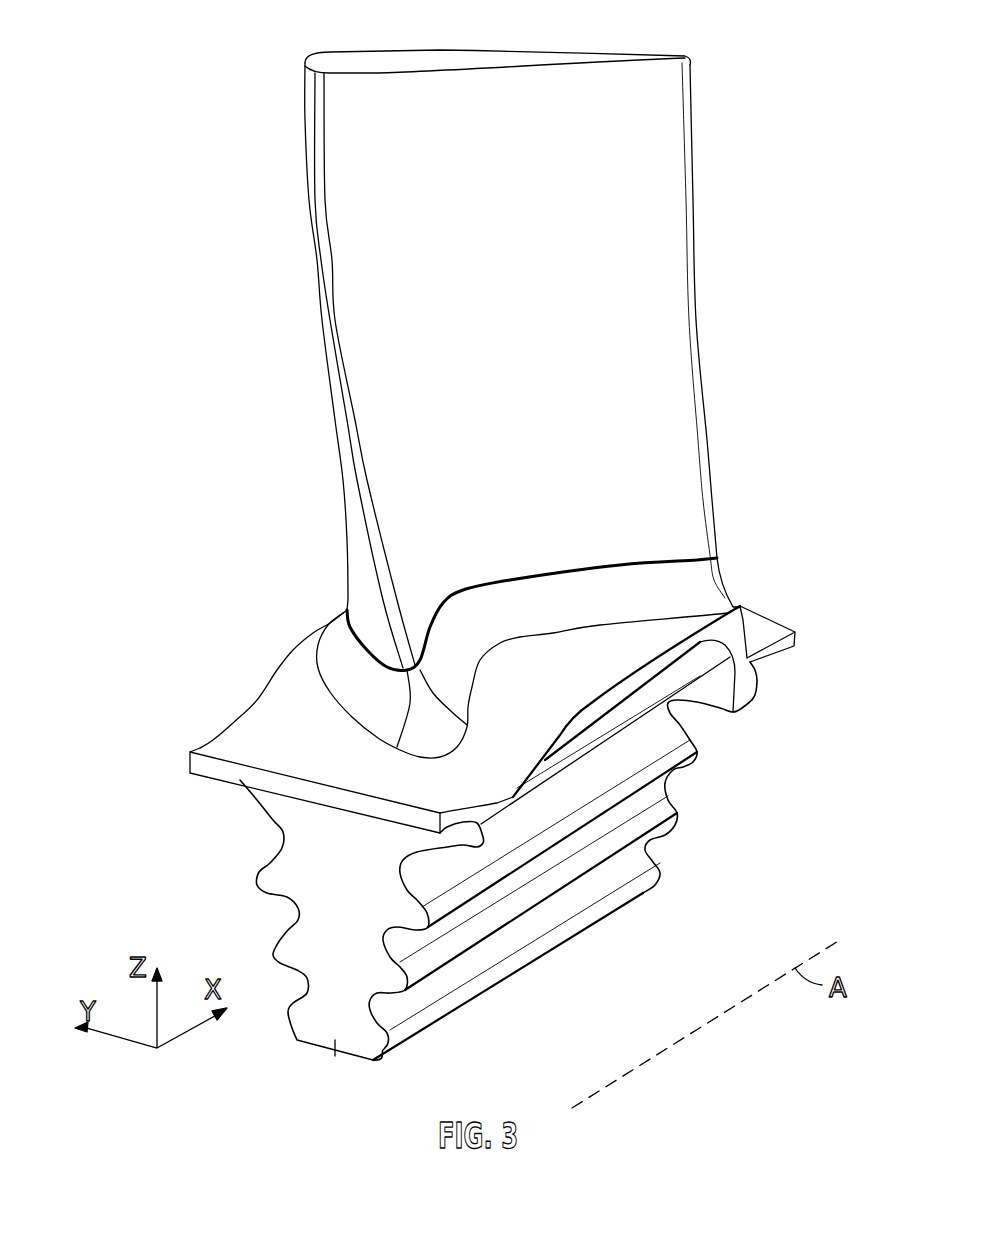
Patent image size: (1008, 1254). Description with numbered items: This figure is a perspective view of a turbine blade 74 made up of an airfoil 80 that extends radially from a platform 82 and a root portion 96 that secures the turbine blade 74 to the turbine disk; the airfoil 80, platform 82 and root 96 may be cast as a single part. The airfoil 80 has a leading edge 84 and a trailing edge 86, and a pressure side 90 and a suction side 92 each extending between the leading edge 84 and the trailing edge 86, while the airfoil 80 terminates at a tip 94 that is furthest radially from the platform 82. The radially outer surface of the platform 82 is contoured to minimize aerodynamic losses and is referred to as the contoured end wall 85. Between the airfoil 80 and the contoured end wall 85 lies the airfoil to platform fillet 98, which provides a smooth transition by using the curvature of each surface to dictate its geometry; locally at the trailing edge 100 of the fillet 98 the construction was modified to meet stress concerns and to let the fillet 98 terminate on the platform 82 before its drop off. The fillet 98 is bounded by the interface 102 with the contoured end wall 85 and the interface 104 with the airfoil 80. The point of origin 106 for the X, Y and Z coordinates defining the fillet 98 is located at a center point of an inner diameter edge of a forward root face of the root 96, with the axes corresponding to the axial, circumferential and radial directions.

The turbine blade 74 is at (270, 236).
The airfoil 80 is at (502, 343).
The platform 82 is at (553, 724).
The leading edge 84 is at (356, 468).
The contoured end wall 85 is at (530, 683).
The trailing edge 86 is at (694, 291).
The pressure side 90 is at (360, 152).
The suction side 92 is at (503, 52).
The tip 94 is at (398, 60).
The root portion 96 is at (557, 942).
The airfoil to platform fillet 98 is at (597, 603).
The trailing edge of the fillet 100 is at (722, 592).
The interface of the fillet to the contoured end wall 102 is at (455, 740).
The interface of the fillet to the airfoil 104 is at (345, 611).
The point of origin 106 is at (334, 1058).